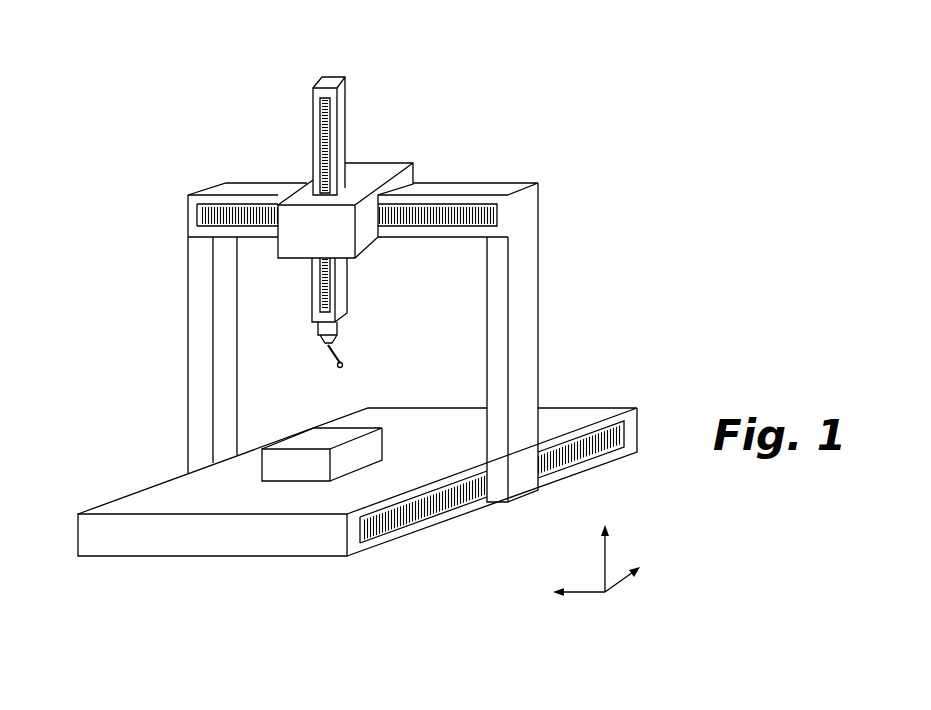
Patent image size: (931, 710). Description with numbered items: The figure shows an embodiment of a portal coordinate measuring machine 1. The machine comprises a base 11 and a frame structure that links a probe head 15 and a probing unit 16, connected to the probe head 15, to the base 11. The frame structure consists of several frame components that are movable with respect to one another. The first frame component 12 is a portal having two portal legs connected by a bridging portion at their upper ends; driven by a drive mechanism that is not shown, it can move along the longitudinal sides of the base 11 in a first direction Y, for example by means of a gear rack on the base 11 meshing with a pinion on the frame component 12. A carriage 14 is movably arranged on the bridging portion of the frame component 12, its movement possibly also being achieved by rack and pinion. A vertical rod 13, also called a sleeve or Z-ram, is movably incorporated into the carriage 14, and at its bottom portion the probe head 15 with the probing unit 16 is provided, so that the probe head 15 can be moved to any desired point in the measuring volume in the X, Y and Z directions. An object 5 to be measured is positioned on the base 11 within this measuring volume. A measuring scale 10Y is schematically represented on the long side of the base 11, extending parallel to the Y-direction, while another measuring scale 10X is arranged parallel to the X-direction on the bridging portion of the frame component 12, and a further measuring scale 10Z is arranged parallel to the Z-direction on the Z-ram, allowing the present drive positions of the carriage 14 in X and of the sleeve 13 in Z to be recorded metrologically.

The portal coordinate measuring machine 1 is at (556, 103).
The object 5 is at (318, 443).
The measuring scale 10X is at (207, 215).
The measuring scale 10Y is at (450, 500).
The measuring scale 10Z is at (325, 124).
The base 11 is at (139, 500).
The first frame component 12 is at (525, 270).
The vertical rod 13 is at (340, 295).
The carriage 14 is at (365, 175).
The probe head 15 is at (312, 339).
The probing unit 16 is at (345, 350).